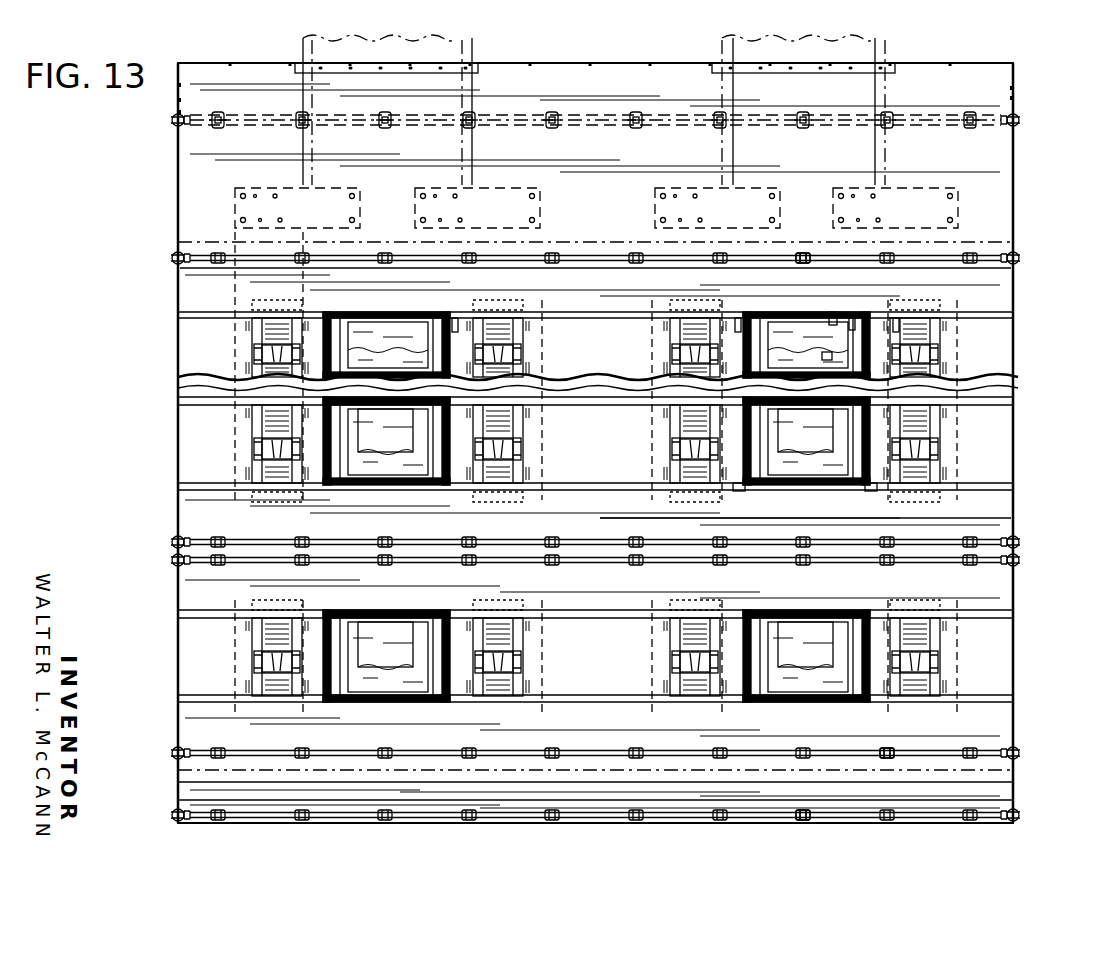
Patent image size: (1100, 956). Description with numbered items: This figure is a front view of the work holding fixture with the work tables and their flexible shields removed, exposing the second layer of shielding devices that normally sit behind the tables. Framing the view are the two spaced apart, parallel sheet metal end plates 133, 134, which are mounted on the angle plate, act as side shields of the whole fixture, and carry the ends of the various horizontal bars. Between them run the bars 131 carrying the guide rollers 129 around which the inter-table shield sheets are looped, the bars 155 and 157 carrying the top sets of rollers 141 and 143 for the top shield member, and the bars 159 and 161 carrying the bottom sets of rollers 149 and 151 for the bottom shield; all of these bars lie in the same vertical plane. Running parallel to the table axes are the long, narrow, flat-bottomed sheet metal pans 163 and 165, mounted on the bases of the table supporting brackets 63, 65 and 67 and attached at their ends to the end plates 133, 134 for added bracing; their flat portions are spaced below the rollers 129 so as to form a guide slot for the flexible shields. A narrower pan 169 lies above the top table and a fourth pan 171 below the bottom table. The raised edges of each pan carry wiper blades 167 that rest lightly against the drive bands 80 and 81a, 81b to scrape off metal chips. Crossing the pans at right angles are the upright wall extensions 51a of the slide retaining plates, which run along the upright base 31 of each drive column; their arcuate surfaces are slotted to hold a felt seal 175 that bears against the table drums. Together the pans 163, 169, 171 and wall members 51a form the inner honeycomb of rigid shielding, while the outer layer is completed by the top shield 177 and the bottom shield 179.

The upright base 31 is at (233, 213).
The wall extensions 51a is at (455, 325).
The table supporting bracket 63 is at (252, 330).
The table supporting bracket 65 is at (252, 410).
The table supporting bracket 67 is at (255, 628).
The drive band 80 is at (833, 320).
The drive band 81a is at (826, 356).
The drive band 81b is at (852, 320).
The guide rollers 129 is at (727, 553).
The bars 131 is at (762, 541).
The end plate 133 is at (178, 344).
The end plate 134 is at (1013, 343).
The rollers 141 is at (805, 263).
The rollers 143 is at (810, 135).
The rollers 149 is at (808, 745).
The rollers 151 is at (807, 820).
The bar 155 is at (832, 255).
The bar 157 is at (825, 112).
The bar 159 is at (905, 745).
The bar 161 is at (905, 810).
The sheet metal pan 163 is at (1002, 390).
The sheet metal pan 165 is at (998, 518).
The wiper blades 167 is at (377, 310).
The pan 169 is at (1002, 277).
The pan 171 is at (998, 708).
The felt seal 175 is at (733, 485).
The top shield 177 is at (998, 186).
The bottom shield 179 is at (1003, 773).